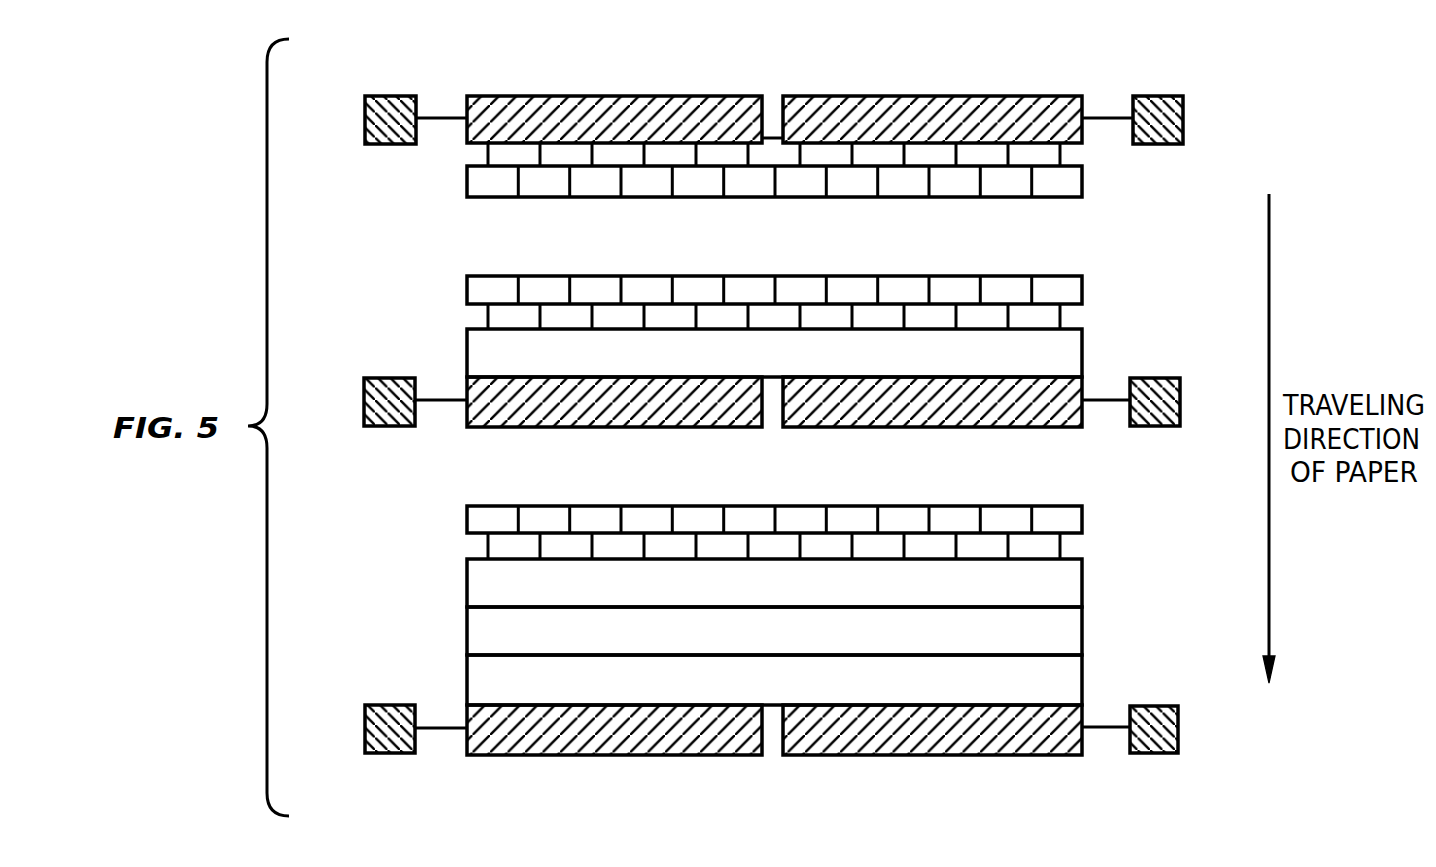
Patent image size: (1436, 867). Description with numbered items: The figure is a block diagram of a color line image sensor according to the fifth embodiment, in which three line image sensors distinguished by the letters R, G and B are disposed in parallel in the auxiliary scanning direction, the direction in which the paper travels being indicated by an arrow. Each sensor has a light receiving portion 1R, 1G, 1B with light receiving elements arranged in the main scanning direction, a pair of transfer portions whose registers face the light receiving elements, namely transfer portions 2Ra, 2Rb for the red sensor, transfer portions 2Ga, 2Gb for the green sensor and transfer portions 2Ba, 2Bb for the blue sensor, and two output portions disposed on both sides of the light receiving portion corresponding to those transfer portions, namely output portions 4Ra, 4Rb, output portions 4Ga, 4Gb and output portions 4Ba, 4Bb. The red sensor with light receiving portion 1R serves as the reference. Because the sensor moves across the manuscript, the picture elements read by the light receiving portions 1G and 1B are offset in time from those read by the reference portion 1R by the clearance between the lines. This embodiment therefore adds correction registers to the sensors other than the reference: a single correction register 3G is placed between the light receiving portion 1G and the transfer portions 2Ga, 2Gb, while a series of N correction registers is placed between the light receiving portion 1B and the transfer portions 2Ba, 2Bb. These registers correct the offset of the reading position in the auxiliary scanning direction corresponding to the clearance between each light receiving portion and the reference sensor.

The light receiving portion 1R is at (523, 197).
The light receiving portion 1G is at (525, 276).
The light receiving portion 1B is at (525, 506).
The transfer portion 2Ra is at (492, 96).
The transfer portion 2Rb is at (800, 96).
The transfer portion 2Ga is at (507, 427).
The transfer portion 2Gb is at (813, 427).
The transfer portion 2Ba is at (506, 755).
The transfer portion 2Bb is at (813, 755).
The correction register 3G is at (483, 350).
The output portion 4Ra is at (365, 107).
The output portion 4Rb is at (1183, 107).
The output portion 4Ga is at (364, 393).
The output portion 4Gb is at (1180, 392).
The output portion 4Ba is at (365, 720).
The output portion 4Bb is at (1178, 719).